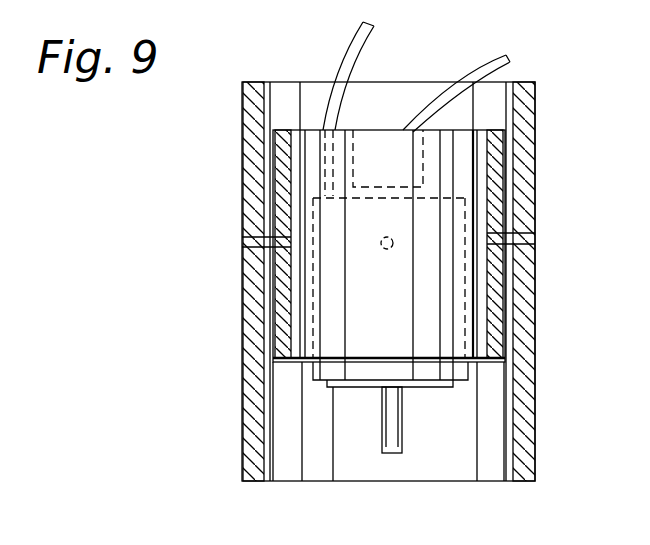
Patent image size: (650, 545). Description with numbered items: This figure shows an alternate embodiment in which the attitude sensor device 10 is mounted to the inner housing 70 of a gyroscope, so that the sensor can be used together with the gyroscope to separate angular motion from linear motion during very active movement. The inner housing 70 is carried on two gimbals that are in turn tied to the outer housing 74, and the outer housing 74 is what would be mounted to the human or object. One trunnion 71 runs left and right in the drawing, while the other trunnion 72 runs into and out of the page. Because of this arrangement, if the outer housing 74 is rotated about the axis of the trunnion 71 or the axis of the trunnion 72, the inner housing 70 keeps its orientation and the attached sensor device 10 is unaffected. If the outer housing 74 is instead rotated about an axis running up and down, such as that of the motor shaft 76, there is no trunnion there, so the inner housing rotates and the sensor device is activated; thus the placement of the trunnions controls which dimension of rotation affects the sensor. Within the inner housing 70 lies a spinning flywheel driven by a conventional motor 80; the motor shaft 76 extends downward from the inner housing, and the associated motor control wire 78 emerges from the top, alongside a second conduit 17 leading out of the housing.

The sensor device 10 is at (423, 158).
The conduit 17 is at (462, 68).
The inner housing 70 is at (450, 318).
The trunnion 71 is at (235, 240).
The trunnion 72 is at (383, 251).
The outer housing 74 is at (242, 423).
The motor shaft 76 is at (402, 440).
The motor control wire 78 is at (357, 43).
The motor 80 is at (355, 388).